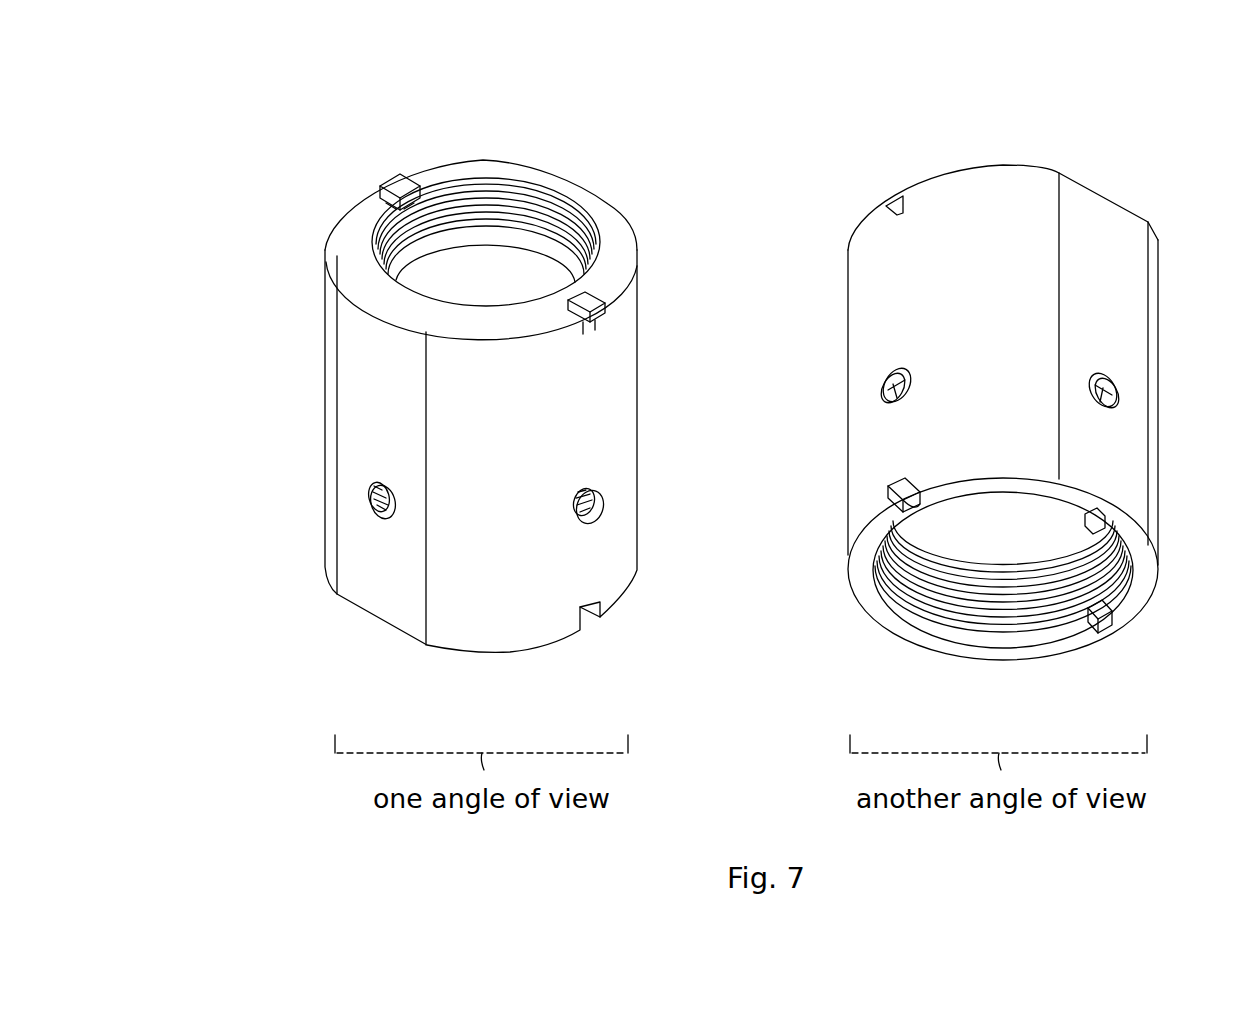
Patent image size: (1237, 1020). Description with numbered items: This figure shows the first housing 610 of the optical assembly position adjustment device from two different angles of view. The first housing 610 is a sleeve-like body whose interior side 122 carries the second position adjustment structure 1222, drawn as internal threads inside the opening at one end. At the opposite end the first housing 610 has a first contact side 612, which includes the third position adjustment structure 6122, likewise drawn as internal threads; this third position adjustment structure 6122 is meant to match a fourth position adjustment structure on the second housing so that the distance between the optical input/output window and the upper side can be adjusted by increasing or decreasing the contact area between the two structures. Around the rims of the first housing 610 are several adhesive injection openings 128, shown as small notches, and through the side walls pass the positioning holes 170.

The first housing 610 is at (222, 762).
The first contact side 612 is at (486, 183).
The third position adjustment structure 6122 is at (457, 205).
The interior side 122 is at (1003, 610).
The second position adjustment structure 1222 is at (1043, 613).
The adhesive injection opening 128 is at (373, 197).
The positioning hole 170 is at (372, 503).